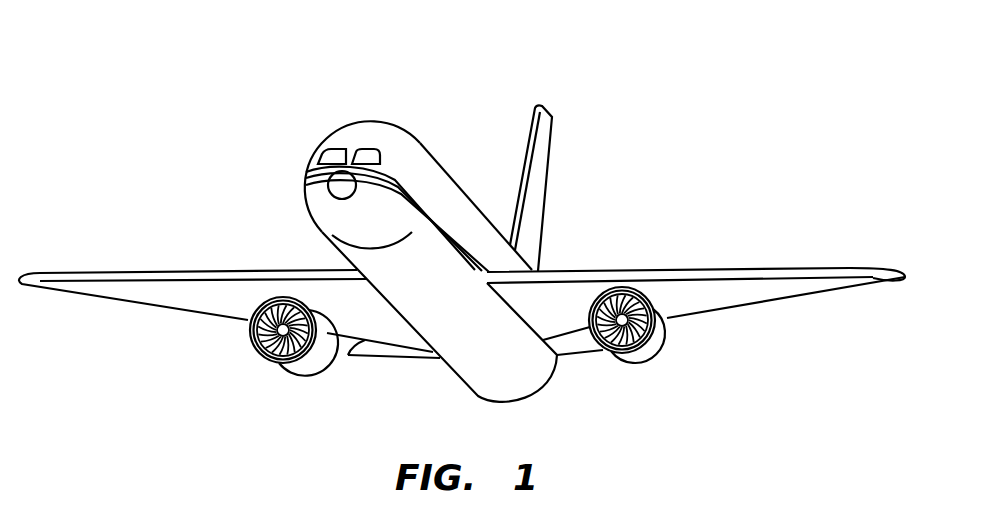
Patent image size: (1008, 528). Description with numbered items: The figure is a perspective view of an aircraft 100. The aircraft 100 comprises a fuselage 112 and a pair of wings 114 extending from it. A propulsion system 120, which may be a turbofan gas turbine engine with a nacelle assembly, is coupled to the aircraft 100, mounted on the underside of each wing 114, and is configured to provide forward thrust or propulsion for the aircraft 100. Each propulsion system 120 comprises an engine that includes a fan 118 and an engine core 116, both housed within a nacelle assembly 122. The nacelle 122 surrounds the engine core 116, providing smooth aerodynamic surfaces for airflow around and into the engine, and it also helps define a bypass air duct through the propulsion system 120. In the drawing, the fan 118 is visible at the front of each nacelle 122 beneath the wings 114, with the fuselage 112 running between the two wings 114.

The aircraft 100 is at (222, 73).
The fuselage 112 is at (450, 200).
The wings 114 is at (111, 268).
The engine core 116 is at (318, 377).
The fan 118 is at (248, 333).
The propulsion system 120 is at (280, 370).
The nacelle assembly 122 is at (317, 355).